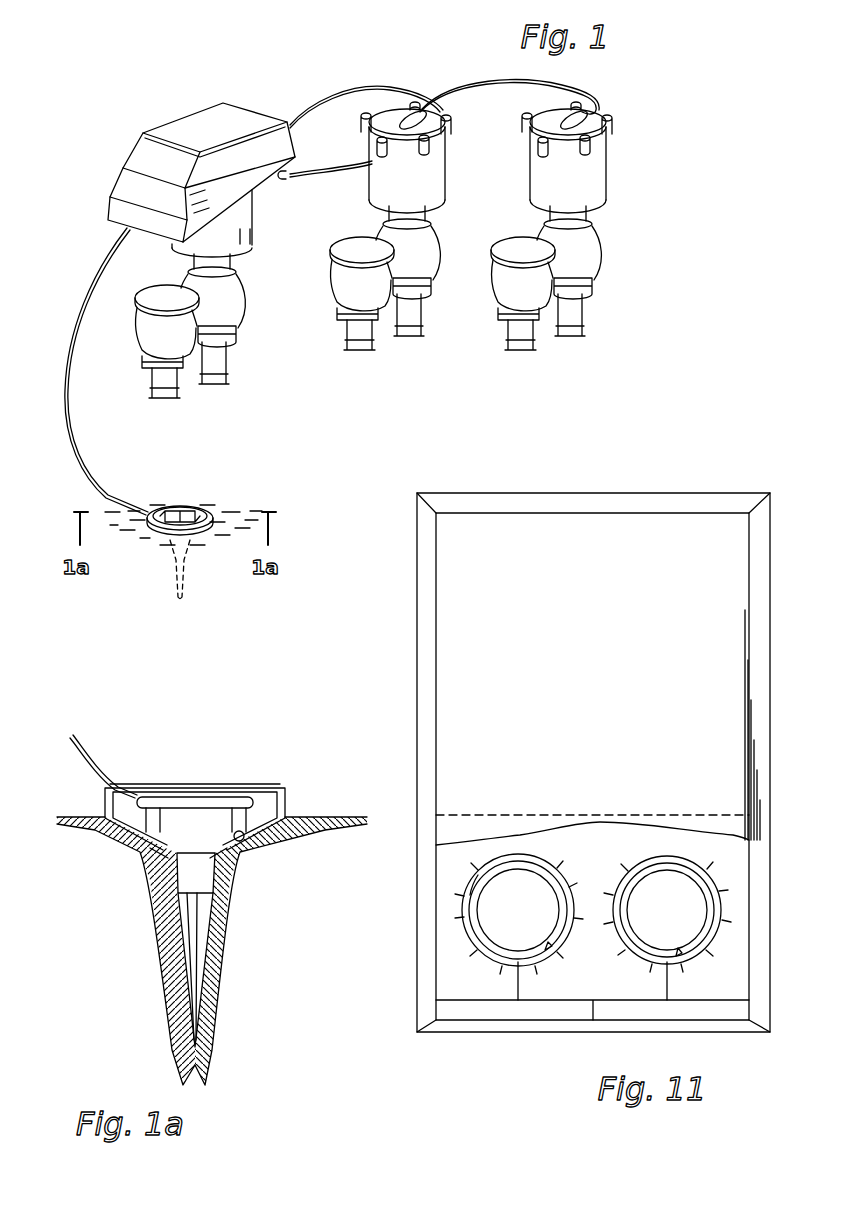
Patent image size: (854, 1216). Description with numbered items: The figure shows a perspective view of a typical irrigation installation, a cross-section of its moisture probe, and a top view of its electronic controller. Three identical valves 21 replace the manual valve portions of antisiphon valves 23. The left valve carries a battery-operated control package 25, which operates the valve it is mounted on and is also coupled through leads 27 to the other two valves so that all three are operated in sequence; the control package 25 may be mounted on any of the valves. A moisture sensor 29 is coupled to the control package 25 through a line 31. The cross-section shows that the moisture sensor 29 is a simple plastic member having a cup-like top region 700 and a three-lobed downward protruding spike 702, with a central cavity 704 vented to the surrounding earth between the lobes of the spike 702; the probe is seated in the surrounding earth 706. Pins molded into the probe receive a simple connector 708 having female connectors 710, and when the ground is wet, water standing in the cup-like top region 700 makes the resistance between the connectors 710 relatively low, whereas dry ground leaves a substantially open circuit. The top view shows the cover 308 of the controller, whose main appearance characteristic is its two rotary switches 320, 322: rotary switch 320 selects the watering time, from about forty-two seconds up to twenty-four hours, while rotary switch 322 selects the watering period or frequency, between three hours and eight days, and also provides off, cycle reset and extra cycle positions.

In FIG. 1, the valve 21 is at (262, 220).
In FIG. 1, the antisiphon valve 23 is at (230, 305).
In FIG. 1, the control package 25 is at (252, 102).
In FIG. 11, the control package 25 is at (618, 486).
In FIG. 1, the leads 27 is at (352, 103).
In FIG. 1, the moisture sensor 29 is at (203, 494).
In FIG. 1A, the moisture sensor 29 is at (297, 776).
In FIG. 1, the line 31 is at (88, 308).
In FIG. 11, the cover 308 is at (443, 907).
In FIG. 11, the rotary switch 320 is at (490, 920).
In FIG. 11, the rotary switch 322 is at (697, 910).
In FIG. 1A, the cup-like top region 700 is at (192, 790).
In FIG. 1A, the downward protruding spike 702 is at (177, 960).
In FIG. 1A, the central cavity 704 is at (185, 873).
In FIG. 1A, the soil / pit wall 706 is at (150, 834).
In FIG. 1A, the connector 708 is at (231, 801).
In FIG. 1A, the female connectors 710 is at (133, 787).